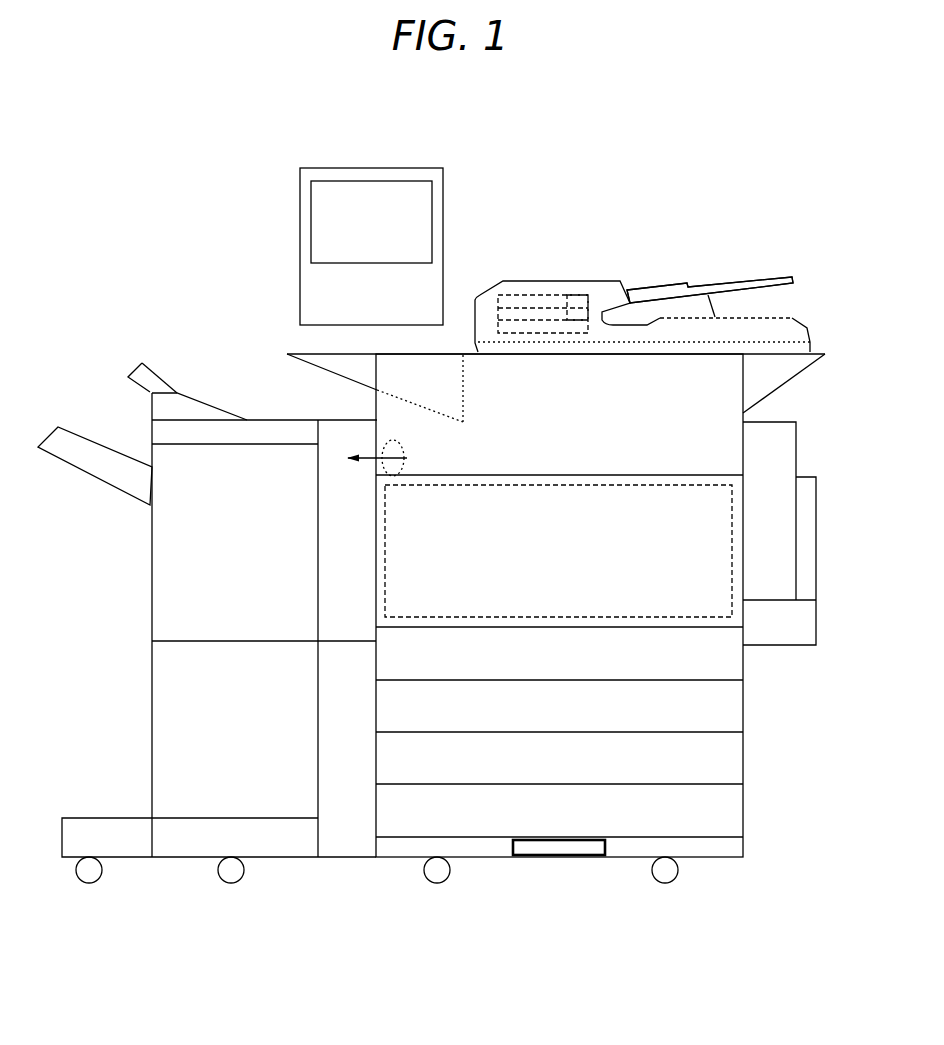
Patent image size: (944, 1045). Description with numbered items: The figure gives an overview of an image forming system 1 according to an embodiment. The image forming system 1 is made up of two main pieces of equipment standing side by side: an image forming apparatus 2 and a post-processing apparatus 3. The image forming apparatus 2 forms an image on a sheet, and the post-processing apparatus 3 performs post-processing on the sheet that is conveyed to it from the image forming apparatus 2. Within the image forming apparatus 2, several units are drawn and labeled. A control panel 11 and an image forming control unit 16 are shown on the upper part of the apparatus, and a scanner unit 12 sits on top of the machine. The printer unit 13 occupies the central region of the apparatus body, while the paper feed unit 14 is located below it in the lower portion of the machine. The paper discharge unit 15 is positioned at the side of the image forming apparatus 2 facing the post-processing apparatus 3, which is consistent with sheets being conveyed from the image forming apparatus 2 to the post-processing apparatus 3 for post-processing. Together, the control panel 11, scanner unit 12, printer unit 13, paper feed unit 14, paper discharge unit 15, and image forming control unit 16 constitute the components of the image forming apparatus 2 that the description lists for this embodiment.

The image forming system 1 is at (548, 145).
The image forming apparatus 2 is at (725, 247).
The post-processing apparatus 3 is at (198, 303).
The control panel 11 is at (530, 293).
The scanner unit 12 is at (659, 282).
The printer unit 13 is at (732, 545).
The paper feed unit 14 is at (733, 662).
The paper discharge unit 15 is at (403, 440).
The image forming control unit 16 is at (570, 293).